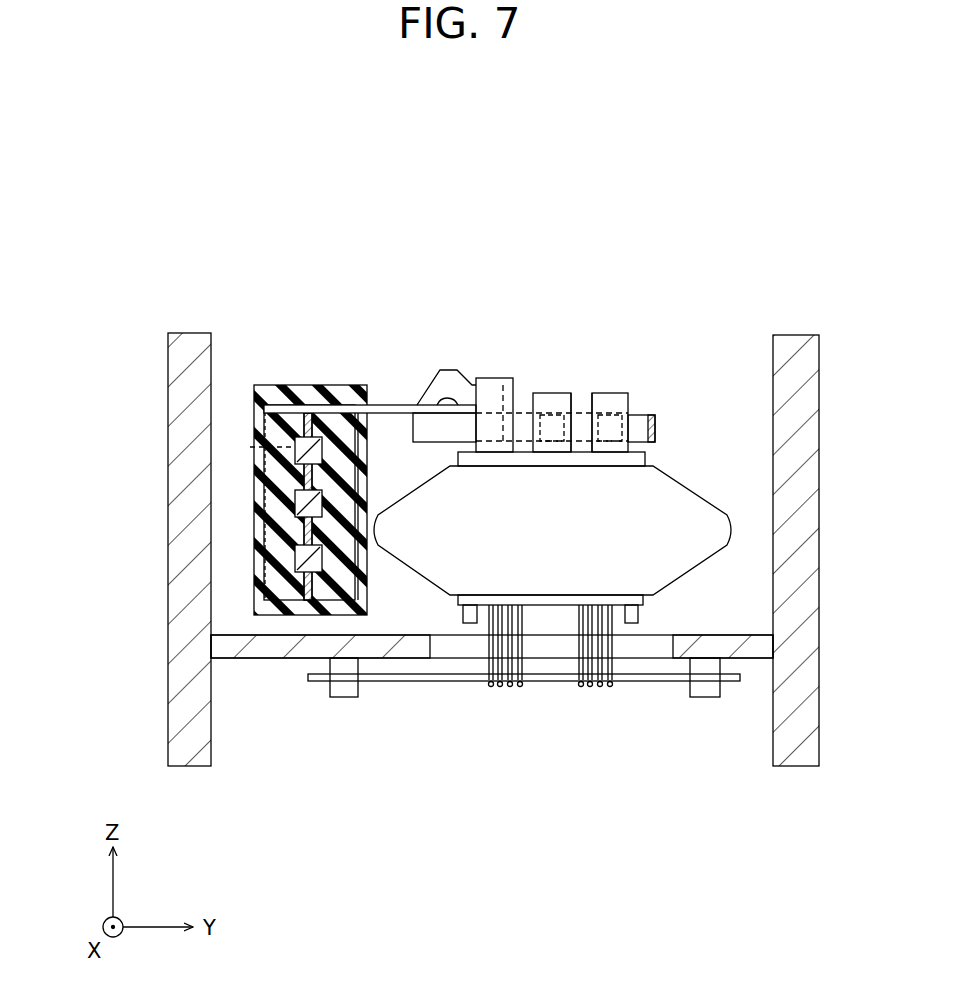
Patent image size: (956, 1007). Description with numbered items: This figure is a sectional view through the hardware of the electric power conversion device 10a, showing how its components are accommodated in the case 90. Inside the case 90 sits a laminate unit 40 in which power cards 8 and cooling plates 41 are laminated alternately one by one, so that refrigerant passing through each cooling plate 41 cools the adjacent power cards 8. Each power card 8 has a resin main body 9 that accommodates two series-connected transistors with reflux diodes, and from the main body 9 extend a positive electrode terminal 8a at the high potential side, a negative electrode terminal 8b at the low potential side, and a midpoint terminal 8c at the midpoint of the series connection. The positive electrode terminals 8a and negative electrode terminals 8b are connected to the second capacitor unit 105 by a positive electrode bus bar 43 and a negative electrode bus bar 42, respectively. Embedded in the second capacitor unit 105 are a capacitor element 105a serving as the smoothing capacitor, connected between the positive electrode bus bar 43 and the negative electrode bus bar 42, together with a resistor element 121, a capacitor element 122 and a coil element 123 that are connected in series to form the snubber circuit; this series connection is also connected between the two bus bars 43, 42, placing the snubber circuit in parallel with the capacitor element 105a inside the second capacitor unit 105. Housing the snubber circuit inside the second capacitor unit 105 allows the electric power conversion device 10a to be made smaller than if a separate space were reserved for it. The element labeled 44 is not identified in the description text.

The electric power conversion device 10a is at (227, 249).
The case 90 is at (188, 347).
The cooling plate 41 is at (710, 523).
The negative electrode bus bar 42 is at (422, 447).
The positive electrode bus bar 43 is at (443, 372).
The housing body 44 is at (652, 413).
The laminate unit 40 is at (655, 339).
The power card 8 is at (638, 264).
The positive electrode terminal 8a is at (510, 377).
The negative electrode terminal 8b is at (546, 392).
The main body 9 is at (580, 450).
The midpoint terminal 8c is at (614, 392).
The second capacitor unit 105 is at (263, 399).
The capacitor element 105a is at (250, 447).
The resistor element 121 is at (296, 458).
The capacitor element 122 is at (296, 510).
The coil element 123 is at (296, 562).